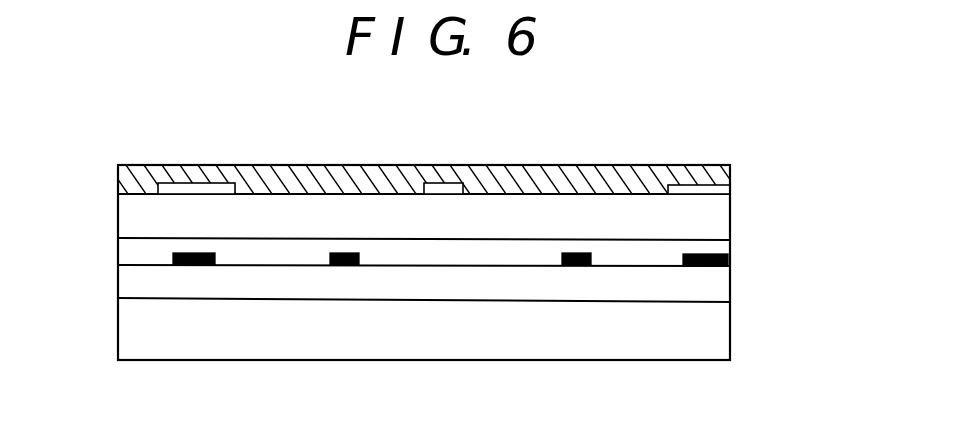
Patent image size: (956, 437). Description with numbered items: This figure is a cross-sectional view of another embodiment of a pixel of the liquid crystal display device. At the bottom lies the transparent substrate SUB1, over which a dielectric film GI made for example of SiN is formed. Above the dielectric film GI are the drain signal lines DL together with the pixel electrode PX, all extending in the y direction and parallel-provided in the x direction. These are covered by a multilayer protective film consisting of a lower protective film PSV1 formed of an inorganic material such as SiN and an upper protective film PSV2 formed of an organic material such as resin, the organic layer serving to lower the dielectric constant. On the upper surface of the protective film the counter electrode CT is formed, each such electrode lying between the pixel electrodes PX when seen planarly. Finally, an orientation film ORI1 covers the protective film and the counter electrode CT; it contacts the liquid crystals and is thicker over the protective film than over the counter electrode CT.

The orientation film ORI1 is at (648, 167).
The counter electrode CT is at (441, 183).
The pixel electrode PX is at (573, 254).
The protective film PSV2 is at (715, 217).
The protective film PSV1 is at (127, 255).
The drain signal line DL is at (172, 259).
The dielectric film GI is at (130, 285).
The transparent substrate SUB1 is at (715, 323).